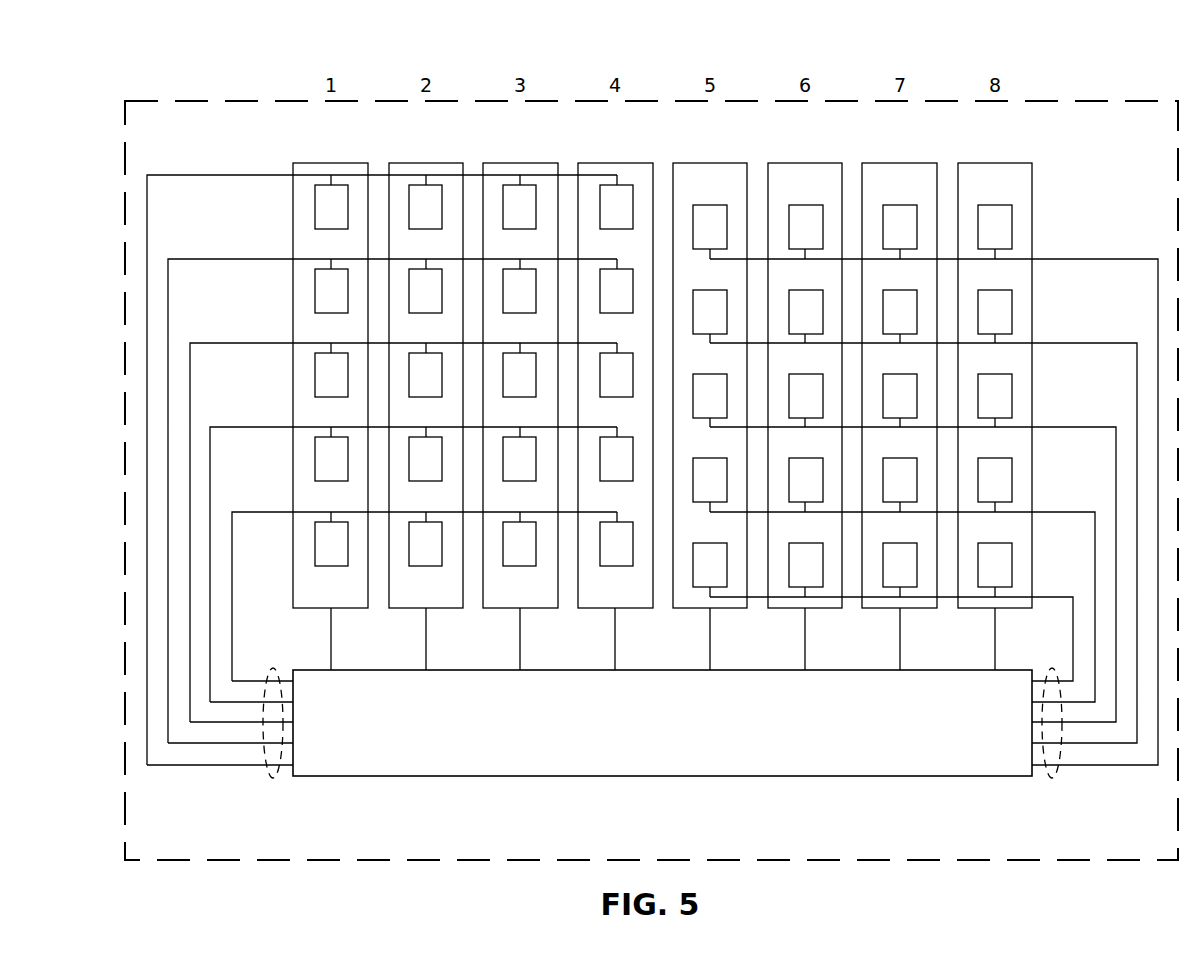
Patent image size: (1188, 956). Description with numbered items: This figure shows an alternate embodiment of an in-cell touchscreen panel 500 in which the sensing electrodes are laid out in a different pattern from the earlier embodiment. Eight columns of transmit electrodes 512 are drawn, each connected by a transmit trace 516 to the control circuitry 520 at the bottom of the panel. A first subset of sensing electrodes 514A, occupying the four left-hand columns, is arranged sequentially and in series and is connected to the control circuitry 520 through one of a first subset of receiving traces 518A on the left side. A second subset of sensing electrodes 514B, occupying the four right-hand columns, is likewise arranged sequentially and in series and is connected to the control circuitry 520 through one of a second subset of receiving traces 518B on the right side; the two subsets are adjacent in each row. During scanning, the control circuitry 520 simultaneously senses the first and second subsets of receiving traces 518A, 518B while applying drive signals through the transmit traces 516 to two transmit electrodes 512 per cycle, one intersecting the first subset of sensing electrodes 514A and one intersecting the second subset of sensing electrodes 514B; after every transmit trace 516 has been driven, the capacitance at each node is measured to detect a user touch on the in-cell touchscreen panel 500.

The in-cell touchscreen panel 500 is at (1050, 101).
The transmit electrode 512 is at (294, 388).
The first subset of sensing electrodes 514A is at (596, 194).
The second subset of sensing electrodes 514B is at (995, 205).
The transmit trace 516 is at (928, 652).
The first subset of receiving traces 518A is at (271, 778).
The second subset of receiving traces 518B is at (1054, 778).
The control circuitry 520 is at (641, 735).